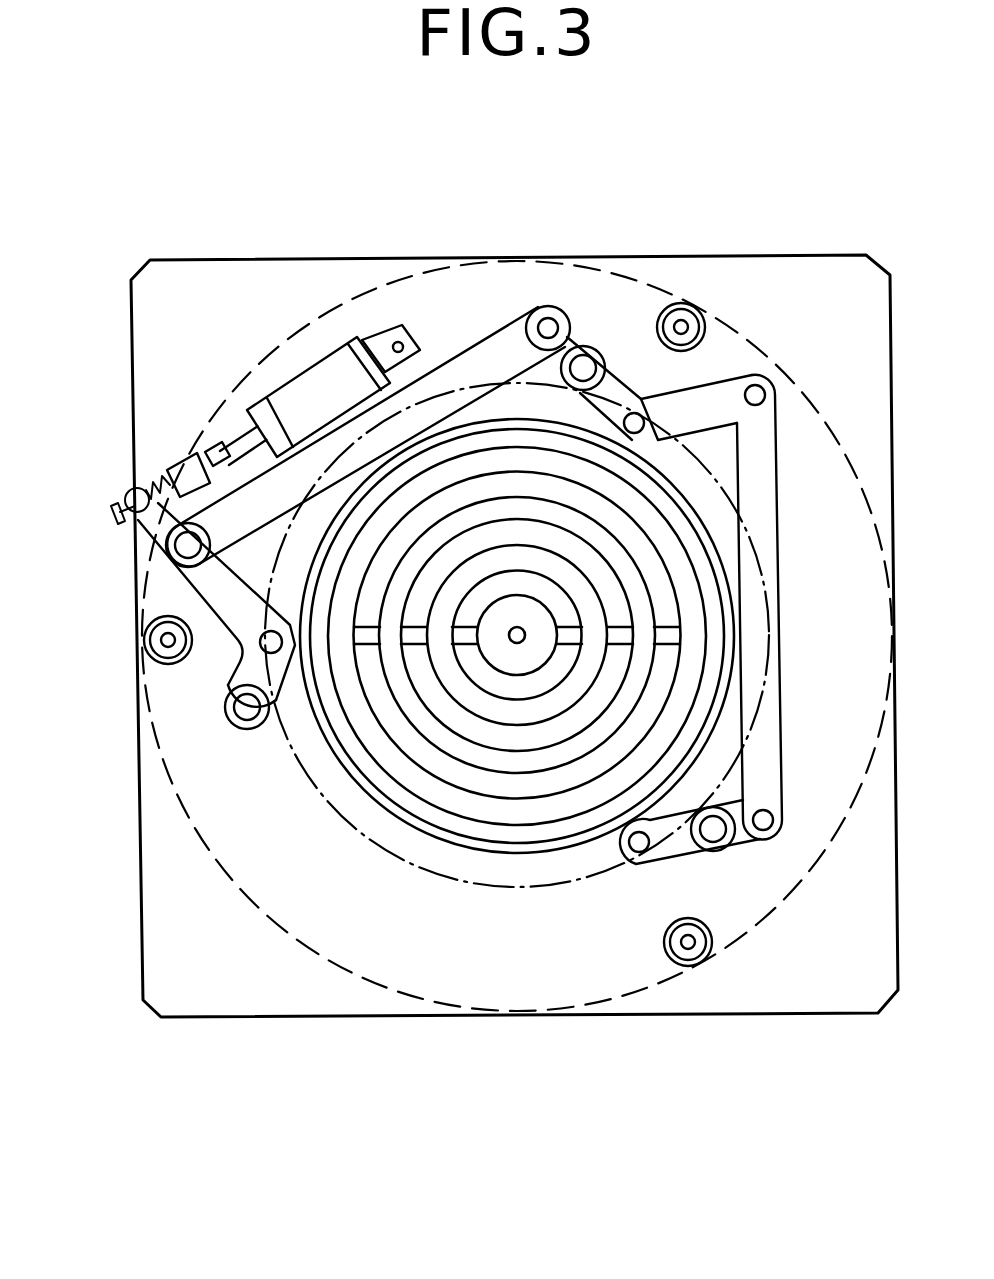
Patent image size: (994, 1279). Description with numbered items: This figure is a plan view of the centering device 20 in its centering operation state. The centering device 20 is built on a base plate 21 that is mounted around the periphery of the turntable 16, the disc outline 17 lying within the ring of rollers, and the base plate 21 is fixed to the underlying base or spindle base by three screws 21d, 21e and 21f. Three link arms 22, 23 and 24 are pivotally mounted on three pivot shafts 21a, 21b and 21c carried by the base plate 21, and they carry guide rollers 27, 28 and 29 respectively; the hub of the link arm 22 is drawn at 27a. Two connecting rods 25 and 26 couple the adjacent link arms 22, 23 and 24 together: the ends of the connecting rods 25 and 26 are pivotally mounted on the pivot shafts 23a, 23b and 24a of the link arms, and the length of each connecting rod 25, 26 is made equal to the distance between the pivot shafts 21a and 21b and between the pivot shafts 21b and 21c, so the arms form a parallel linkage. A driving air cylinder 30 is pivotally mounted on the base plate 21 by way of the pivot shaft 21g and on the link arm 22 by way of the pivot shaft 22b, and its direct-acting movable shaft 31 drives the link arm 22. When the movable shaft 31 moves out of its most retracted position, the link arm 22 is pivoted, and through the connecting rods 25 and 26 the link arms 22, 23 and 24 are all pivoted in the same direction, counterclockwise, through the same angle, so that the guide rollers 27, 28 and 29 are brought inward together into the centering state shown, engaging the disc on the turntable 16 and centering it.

The turntable 16 is at (531, 824).
The disk outer periphery (phantom) 17 is at (485, 888).
The centering device 20 is at (128, 548).
The base plate 21 is at (190, 285).
The pivot shaft 21a is at (312, 705).
The pivot shaft 21b is at (636, 420).
The pivot shaft 21c is at (638, 850).
The screw 21d is at (168, 648).
The screw 21e is at (683, 322).
The screw 21f is at (688, 950).
The pivot shaft 21g is at (400, 338).
The link arm 22 is at (270, 652).
The pivot shaft 22b is at (135, 490).
The link arm 23 is at (710, 398).
The pivot shaft 23a is at (548, 318).
The pivot shaft 23b is at (758, 382).
The link arm 24 is at (717, 840).
The pivot shaft 24a is at (763, 840).
The connecting rod 25 is at (500, 340).
The connecting rod 26 is at (776, 782).
The guide roller 27 is at (262, 722).
The pivot 27a is at (178, 552).
The guide roller 28 is at (590, 358).
The guide roller 29 is at (682, 852).
The driving air cylinder 30 is at (335, 345).
The direct-acting movable shaft 31 is at (238, 440).